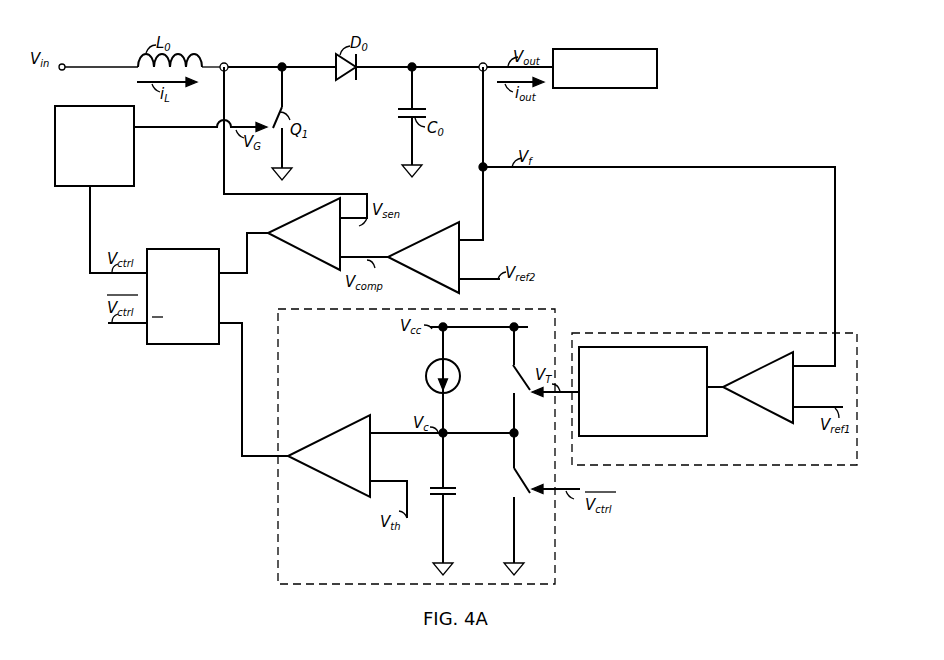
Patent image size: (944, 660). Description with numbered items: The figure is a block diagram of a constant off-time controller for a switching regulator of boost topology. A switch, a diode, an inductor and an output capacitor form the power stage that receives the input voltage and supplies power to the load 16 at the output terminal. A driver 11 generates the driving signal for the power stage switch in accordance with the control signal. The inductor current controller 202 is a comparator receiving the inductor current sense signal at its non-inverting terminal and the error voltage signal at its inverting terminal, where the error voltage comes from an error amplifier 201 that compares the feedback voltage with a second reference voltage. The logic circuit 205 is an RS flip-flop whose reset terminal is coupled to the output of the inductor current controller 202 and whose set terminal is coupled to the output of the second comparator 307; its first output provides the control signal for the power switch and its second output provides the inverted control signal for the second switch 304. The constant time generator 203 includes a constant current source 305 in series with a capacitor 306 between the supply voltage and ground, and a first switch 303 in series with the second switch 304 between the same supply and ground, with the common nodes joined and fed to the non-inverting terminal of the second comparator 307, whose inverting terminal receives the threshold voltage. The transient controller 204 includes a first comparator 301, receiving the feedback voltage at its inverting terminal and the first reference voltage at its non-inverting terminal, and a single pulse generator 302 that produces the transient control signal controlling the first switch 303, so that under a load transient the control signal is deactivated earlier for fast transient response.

The load 16 is at (605, 68).
The driver 11 is at (94, 146).
The logic circuit 205 is at (183, 296).
The inductor current controller 202 is at (304, 234).
The comparator 201 is at (423, 257).
The transient controller 204 is at (714, 399).
The single pulse generator 302 is at (643, 391).
The first comparator 301 is at (758, 387).
The constant time generator 203 is at (416, 446).
The constant current source 305 is at (428, 369).
The capacitor 306 is at (428, 496).
The first switch 303 is at (513, 378).
The second switch 304 is at (513, 481).
The second comparator 307 is at (329, 456).